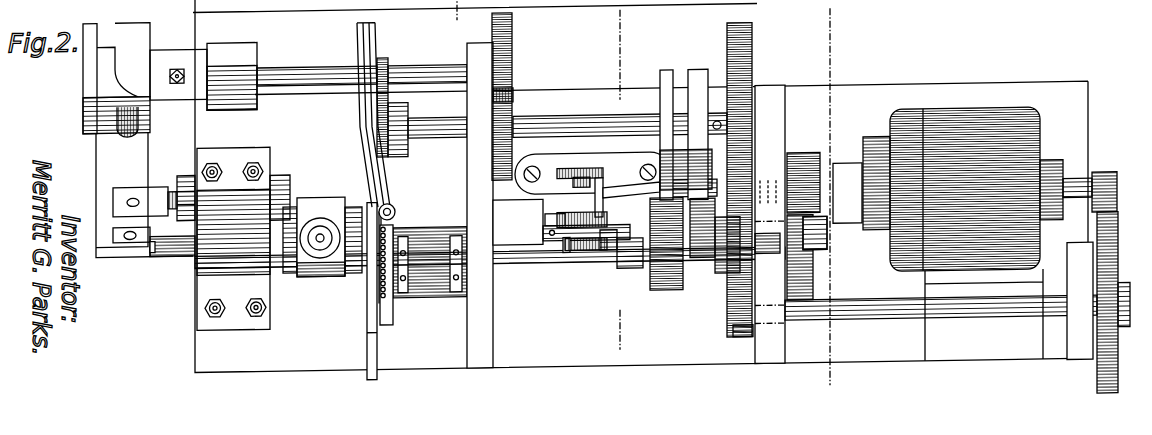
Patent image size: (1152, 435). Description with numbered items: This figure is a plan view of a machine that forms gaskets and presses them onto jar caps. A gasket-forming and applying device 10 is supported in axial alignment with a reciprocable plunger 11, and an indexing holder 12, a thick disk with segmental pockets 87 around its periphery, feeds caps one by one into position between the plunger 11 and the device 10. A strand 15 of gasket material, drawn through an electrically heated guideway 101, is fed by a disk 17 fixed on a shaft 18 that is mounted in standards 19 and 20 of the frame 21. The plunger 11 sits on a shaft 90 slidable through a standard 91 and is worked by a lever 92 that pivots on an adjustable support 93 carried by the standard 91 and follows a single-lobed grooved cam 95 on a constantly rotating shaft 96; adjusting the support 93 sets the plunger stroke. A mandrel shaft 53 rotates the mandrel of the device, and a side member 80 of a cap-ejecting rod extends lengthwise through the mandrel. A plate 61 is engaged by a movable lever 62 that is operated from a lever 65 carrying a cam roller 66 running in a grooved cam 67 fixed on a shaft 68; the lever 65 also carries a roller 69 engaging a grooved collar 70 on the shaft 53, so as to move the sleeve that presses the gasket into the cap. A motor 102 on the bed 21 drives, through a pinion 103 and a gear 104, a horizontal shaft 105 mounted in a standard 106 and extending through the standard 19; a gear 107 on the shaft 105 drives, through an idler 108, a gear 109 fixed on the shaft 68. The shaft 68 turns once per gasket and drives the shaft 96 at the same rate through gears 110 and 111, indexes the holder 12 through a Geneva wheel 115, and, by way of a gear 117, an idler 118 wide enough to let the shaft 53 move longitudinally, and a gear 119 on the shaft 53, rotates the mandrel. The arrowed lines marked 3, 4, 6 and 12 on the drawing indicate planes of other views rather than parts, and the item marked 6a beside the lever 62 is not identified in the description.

The section line 3- 3 is at (815, 31).
The section line 4- 4 is at (469, 11).
The section line 6- 6 is at (353, 248).
The lever arm 6a is at (615, 186).
The gasket-forming and applying device 10 is at (509, 270).
The reciprocable plunger 11 is at (307, 278).
The indexing holder 12 is at (364, 320).
The strand of gasket material 15 is at (380, 35).
The disk 17 is at (388, 57).
The shaft 18 is at (570, 250).
The standard 19 is at (486, 368).
The standard 20 is at (770, 360).
The frame 21 is at (890, 89).
The mandrel shaft 53 is at (625, 270).
The plate 61 is at (595, 199).
The movable lever 62 is at (577, 168).
The lever 65 is at (720, 183).
The cam roller 66 is at (687, 170).
The grooved cam 67 is at (690, 72).
The shaft 68 is at (604, 118).
The roller 69 is at (676, 262).
The grooved collar 70 is at (692, 262).
The side member 80 is at (583, 252).
The segmental pockets 87 is at (368, 262).
The shaft 90 is at (182, 252).
The standard 91 is at (197, 290).
The lever 92 is at (96, 150).
The adjustable support 93 is at (160, 181).
The grooved cam 95 is at (139, 26).
The shaft 96 is at (311, 62).
The heated guideway 101 is at (357, 32).
The motor 102 is at (978, 115).
The pinion 103 is at (1100, 180).
The gear 104 is at (1122, 264).
The horizontal shaft 105 is at (990, 323).
The standard 106 is at (1077, 353).
The gear 107 is at (742, 340).
The idler 108 is at (732, 276).
The gear 109 is at (742, 26).
The gear 110 is at (507, 94).
The gear 111 is at (513, 31).
The Geneva wheel 115 is at (394, 317).
The gear 117 is at (806, 281).
The idler 118 is at (800, 157).
The gear 119 is at (818, 231).